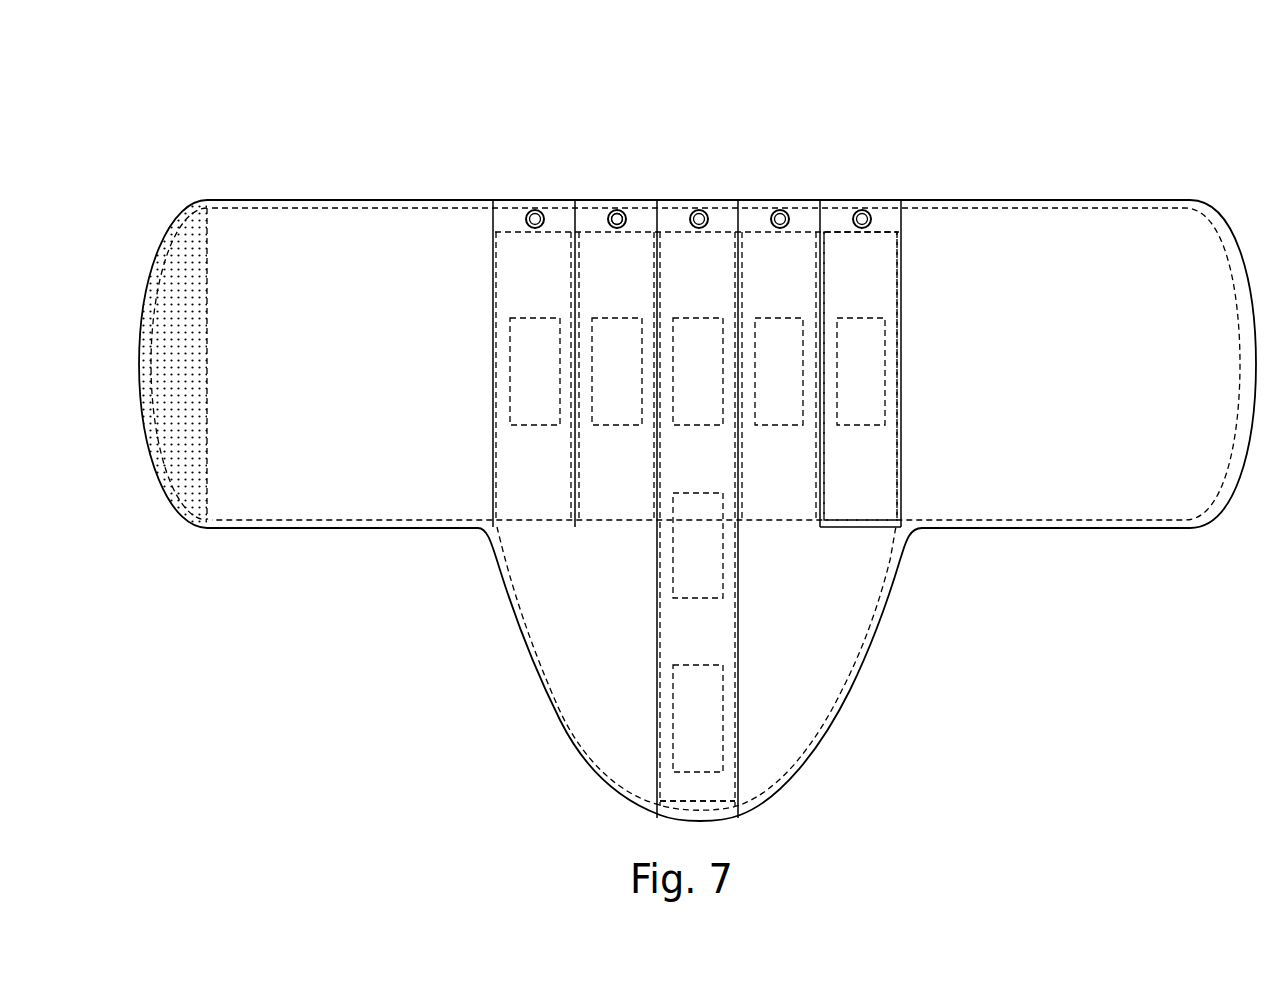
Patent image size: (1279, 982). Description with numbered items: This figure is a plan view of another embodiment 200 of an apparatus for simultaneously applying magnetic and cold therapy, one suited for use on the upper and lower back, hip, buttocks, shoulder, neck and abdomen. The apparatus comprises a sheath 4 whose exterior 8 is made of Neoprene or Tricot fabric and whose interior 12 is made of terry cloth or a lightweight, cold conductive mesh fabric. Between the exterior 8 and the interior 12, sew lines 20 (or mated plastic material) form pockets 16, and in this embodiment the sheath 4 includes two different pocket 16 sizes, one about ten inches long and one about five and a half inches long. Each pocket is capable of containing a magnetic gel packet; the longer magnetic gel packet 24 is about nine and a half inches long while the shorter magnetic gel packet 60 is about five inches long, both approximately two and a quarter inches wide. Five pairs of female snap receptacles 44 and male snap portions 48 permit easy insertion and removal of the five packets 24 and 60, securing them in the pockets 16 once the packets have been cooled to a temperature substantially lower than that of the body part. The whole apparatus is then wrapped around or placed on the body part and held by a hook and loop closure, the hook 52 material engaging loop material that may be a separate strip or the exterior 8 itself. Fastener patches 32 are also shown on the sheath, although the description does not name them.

The apparatus embodiment 200 is at (440, 155).
The sheath 4 is at (988, 200).
The exterior 8 is at (800, 578).
The interior 12 is at (677, 200).
The pocket 16 is at (724, 222).
The sew line 20 is at (820, 527).
The magnetic gel packet 24 is at (670, 787).
The fastener patch 32 is at (523, 385).
The female snap receptacle 44 is at (613, 210).
The male snap portion 48 is at (618, 212).
The hook material 52 is at (178, 481).
The magnetic gel packet 60 is at (845, 263).